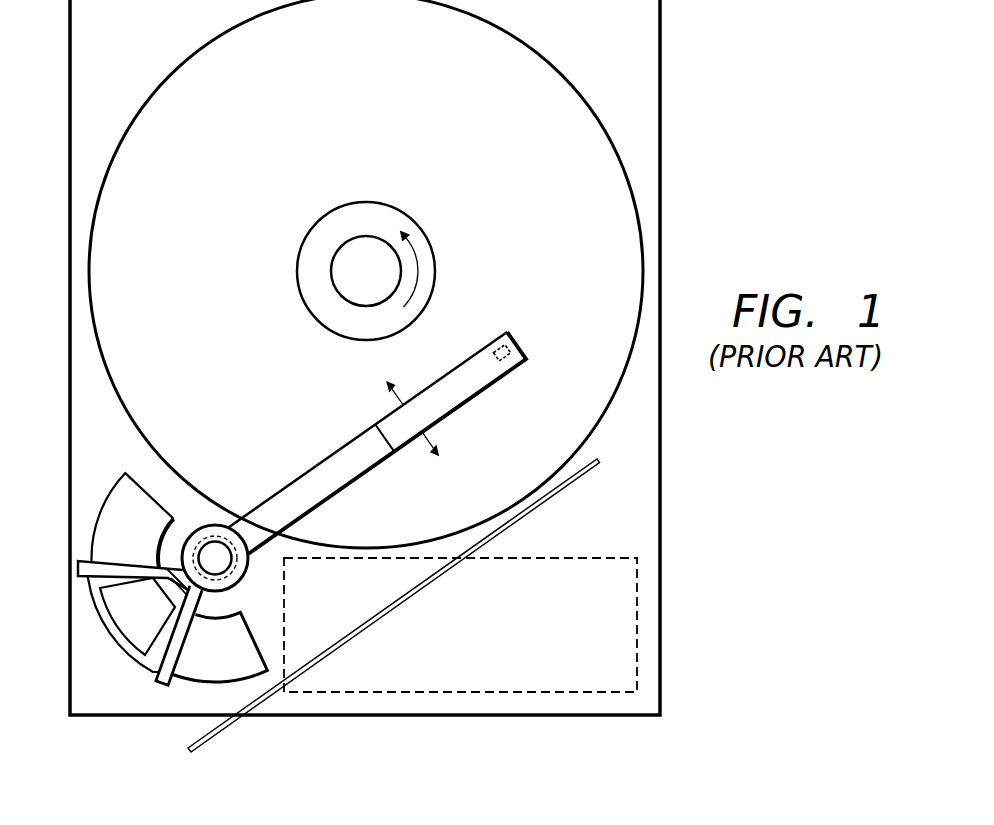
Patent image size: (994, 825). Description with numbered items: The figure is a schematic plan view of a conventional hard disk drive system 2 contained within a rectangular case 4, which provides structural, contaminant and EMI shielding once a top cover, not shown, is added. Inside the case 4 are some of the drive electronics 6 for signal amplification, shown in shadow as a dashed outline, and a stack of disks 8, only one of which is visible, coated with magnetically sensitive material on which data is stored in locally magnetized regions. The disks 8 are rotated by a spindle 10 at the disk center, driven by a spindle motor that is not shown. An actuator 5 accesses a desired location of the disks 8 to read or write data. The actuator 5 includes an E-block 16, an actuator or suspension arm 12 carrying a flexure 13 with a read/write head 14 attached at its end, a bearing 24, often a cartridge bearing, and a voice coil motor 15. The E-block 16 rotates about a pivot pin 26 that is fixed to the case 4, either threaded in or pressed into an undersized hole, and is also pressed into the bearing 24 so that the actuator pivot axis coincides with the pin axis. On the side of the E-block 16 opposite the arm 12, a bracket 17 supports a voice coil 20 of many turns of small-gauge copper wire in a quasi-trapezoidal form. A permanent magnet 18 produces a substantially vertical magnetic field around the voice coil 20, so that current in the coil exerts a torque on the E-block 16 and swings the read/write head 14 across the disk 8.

The hard disk drive system 2 is at (722, 178).
The rectangular case 4 is at (68, 25).
The actuator 5 is at (398, 608).
The drive electronics 6 is at (601, 557).
The disks 8 is at (375, 88).
The spindle 10 is at (331, 207).
The actuator arms 12 is at (305, 474).
The flexures 13 is at (490, 343).
The read/write heads 14 is at (515, 342).
The voice coil motor 15 is at (114, 452).
The E-block 16 is at (236, 588).
The bracket 17 is at (185, 645).
The permanent magnet 18 is at (139, 539).
The voice coil 20 is at (128, 657).
The bearing 24 is at (215, 536).
The pivot pin 26 is at (221, 541).